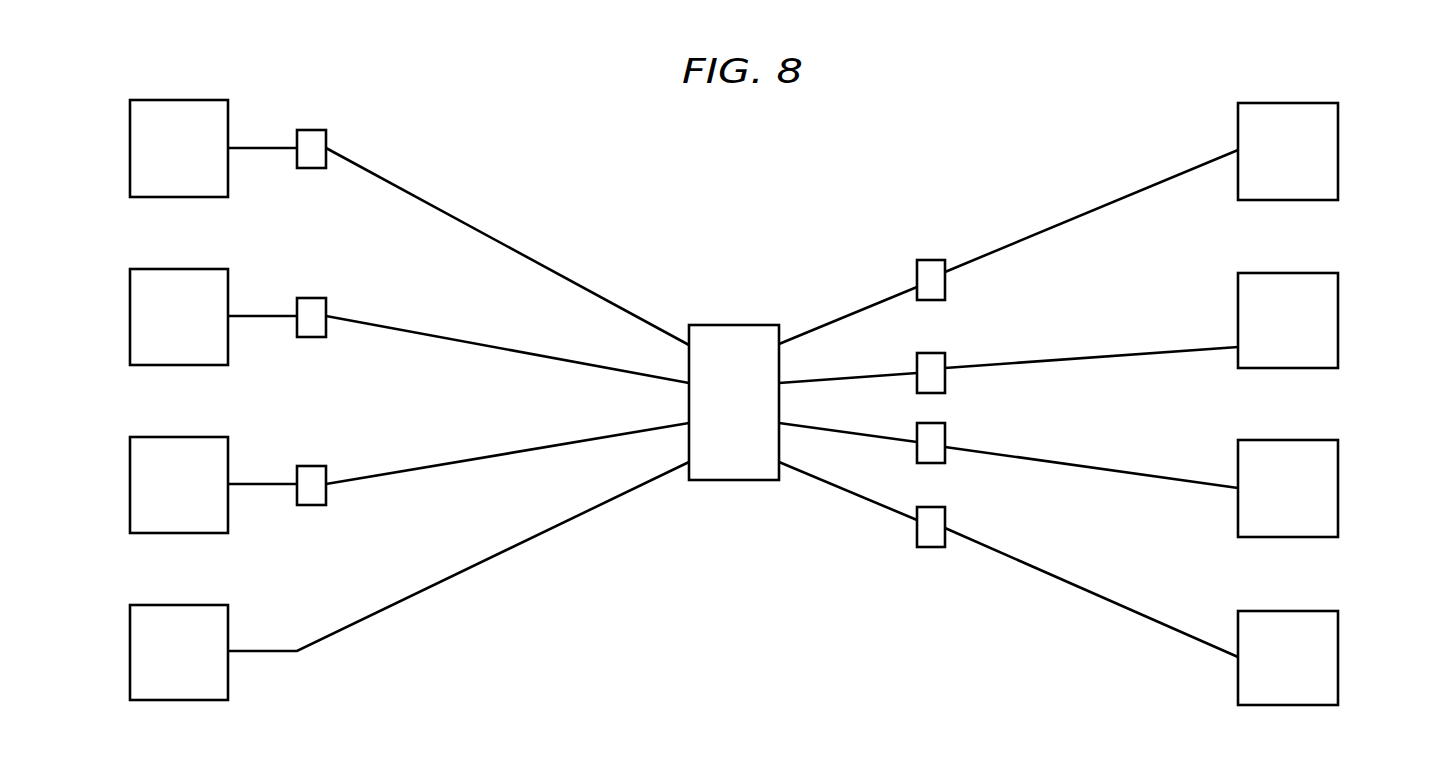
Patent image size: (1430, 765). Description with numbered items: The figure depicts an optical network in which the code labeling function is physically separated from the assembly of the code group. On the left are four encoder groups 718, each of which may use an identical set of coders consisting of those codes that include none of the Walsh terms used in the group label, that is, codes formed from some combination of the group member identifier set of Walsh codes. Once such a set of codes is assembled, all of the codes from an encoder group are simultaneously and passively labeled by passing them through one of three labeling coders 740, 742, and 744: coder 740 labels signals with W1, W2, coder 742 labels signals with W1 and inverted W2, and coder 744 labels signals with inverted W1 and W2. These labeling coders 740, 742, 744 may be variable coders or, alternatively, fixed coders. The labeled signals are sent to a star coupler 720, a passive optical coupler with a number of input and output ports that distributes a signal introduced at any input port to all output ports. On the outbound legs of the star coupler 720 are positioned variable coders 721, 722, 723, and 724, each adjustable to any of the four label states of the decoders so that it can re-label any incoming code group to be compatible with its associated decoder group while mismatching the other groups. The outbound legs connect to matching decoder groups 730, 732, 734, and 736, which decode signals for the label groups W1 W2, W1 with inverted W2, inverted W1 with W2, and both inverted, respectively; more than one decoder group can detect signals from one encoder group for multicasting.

The encoder group 718 is at (155, 100).
The star coupler 720 is at (707, 325).
The variable coder 721 is at (928, 260).
The variable coder 722 is at (945, 360).
The variable coder 723 is at (945, 432).
The variable coder 724 is at (945, 522).
The decoder group 730 is at (1338, 130).
The decoder group 732 is at (1338, 300).
The decoder group 734 is at (1338, 467).
The decoder group 736 is at (1338, 640).
The labeling coder 740 is at (306, 130).
The labeling coder 742 is at (306, 298).
The labeling coder 744 is at (306, 466).